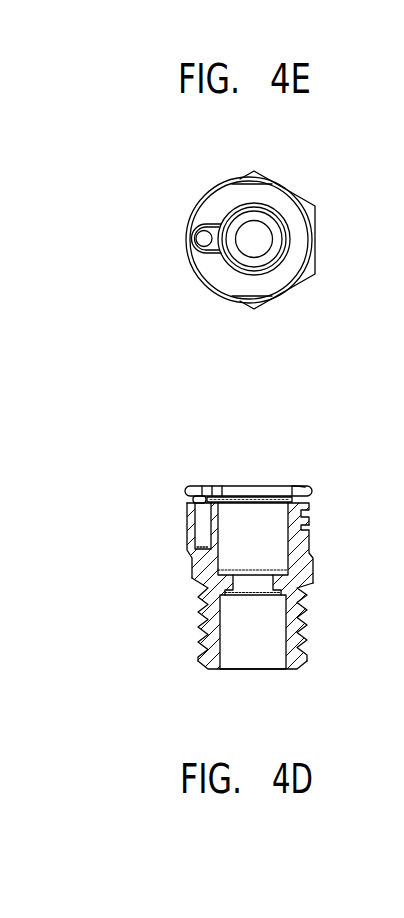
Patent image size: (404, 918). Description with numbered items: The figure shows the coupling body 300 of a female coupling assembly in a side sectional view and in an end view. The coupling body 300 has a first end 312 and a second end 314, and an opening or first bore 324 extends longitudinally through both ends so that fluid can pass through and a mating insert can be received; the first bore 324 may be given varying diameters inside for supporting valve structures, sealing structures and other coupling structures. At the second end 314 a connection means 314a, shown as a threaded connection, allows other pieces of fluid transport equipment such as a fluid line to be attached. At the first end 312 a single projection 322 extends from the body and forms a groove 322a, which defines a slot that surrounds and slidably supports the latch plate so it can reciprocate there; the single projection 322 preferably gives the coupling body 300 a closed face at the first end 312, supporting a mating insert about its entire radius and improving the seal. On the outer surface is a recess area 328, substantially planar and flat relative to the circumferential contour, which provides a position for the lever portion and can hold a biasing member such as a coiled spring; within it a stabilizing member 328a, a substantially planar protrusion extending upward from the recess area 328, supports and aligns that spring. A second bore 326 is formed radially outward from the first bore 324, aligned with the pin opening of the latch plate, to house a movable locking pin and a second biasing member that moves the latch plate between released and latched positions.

In FIG. 4E, the coupling body 300 is at (296, 178).
In FIG. 4D, the first end 312 is at (300, 486).
In FIG. 4D, the second end 314 is at (293, 667).
In FIG. 4D, the connection means 314a is at (298, 622).
In FIG. 4E, the projection 322 is at (228, 199).
In FIG. 4D, the projection 322 is at (188, 486).
In FIG. 4D, the groove 322a is at (192, 499).
In FIG. 4E, the first bore 324 is at (260, 237).
In FIG. 4D, the first bore 324 is at (233, 537).
In FIG. 4E, the second bore 326 is at (195, 243).
In FIG. 4D, the second bore 326 is at (205, 528).
In FIG. 4D, the recess area 328 is at (303, 512).
In FIG. 4D, the stabilizing member 328a is at (303, 526).